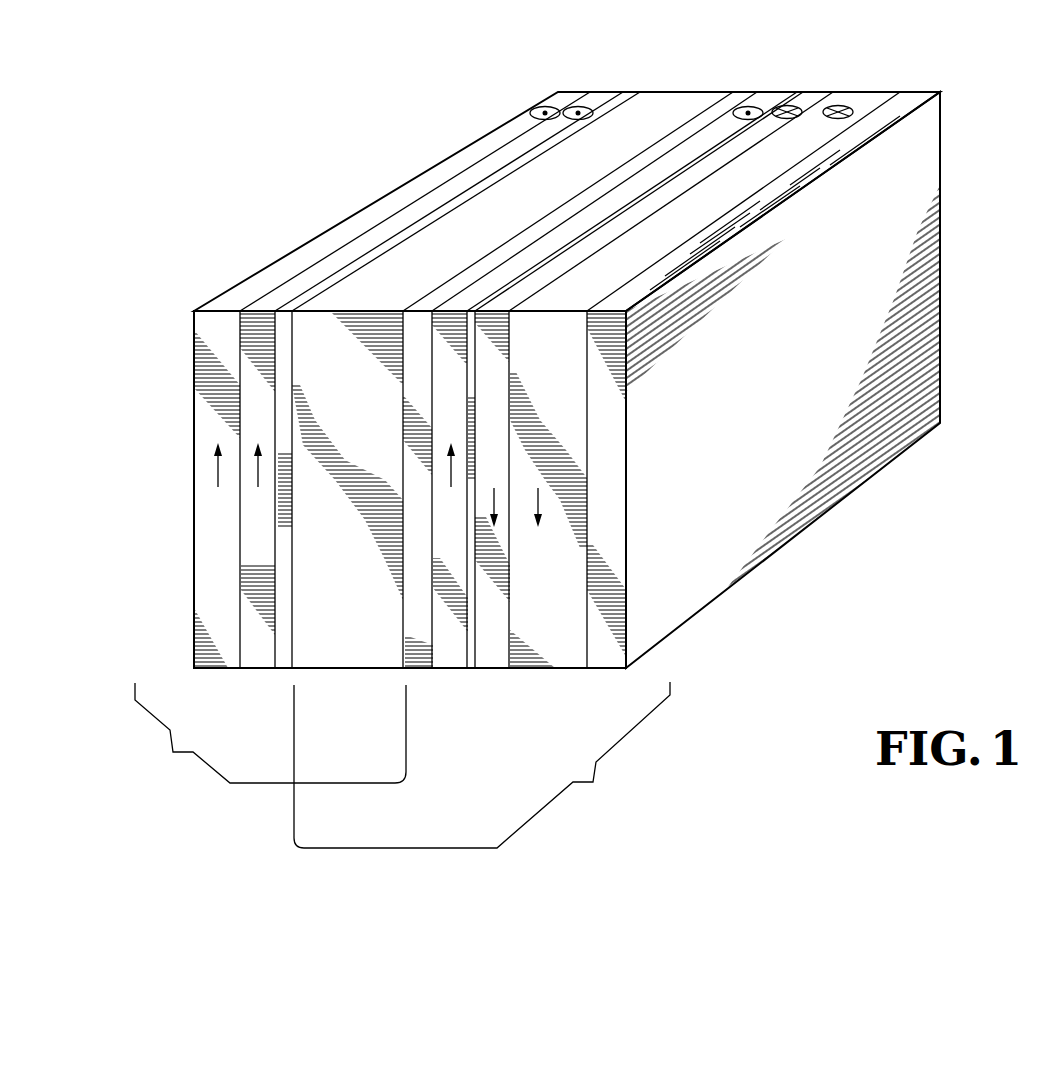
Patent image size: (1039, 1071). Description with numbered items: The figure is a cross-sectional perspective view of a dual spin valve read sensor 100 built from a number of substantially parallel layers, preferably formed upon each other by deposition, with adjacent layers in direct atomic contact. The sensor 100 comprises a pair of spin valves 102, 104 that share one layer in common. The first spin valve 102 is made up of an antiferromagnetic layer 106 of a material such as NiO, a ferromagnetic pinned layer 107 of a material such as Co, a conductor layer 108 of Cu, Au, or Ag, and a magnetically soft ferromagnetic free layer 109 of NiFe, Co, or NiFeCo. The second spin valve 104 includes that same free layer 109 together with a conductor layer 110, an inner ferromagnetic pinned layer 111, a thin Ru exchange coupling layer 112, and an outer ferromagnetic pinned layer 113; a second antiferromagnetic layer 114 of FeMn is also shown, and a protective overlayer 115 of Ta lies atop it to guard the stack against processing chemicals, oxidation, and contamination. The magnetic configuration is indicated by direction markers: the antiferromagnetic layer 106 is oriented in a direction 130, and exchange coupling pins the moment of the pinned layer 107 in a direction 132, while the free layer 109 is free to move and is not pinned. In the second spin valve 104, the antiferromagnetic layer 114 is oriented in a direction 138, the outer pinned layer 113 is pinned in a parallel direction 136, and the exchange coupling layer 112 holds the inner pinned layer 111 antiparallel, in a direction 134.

The sensor 100 is at (288, 163).
The spin valve 102 is at (270, 736).
The spin valve 104 is at (482, 765).
The antiferromagnetic layer 106 is at (218, 665).
The ferromagnetic pinned layer 107 is at (262, 663).
The conductor layer 108 is at (287, 662).
The ferromagnetic free layer 109 is at (372, 663).
The conductor layer 110 is at (420, 662).
The inner ferromagnetic pinned layer 111 is at (448, 662).
The exchange coupling layer 112 is at (472, 660).
The outer ferromagnetic pinned layer 113 is at (490, 660).
The second antiferromagnetic layer 114 is at (543, 660).
The protective overlayer 115 is at (602, 658).
The direction 130 is at (543, 108).
The direction 132 is at (585, 107).
The direction 134 is at (760, 107).
The direction 136 is at (798, 107).
The direction 138 is at (850, 106).